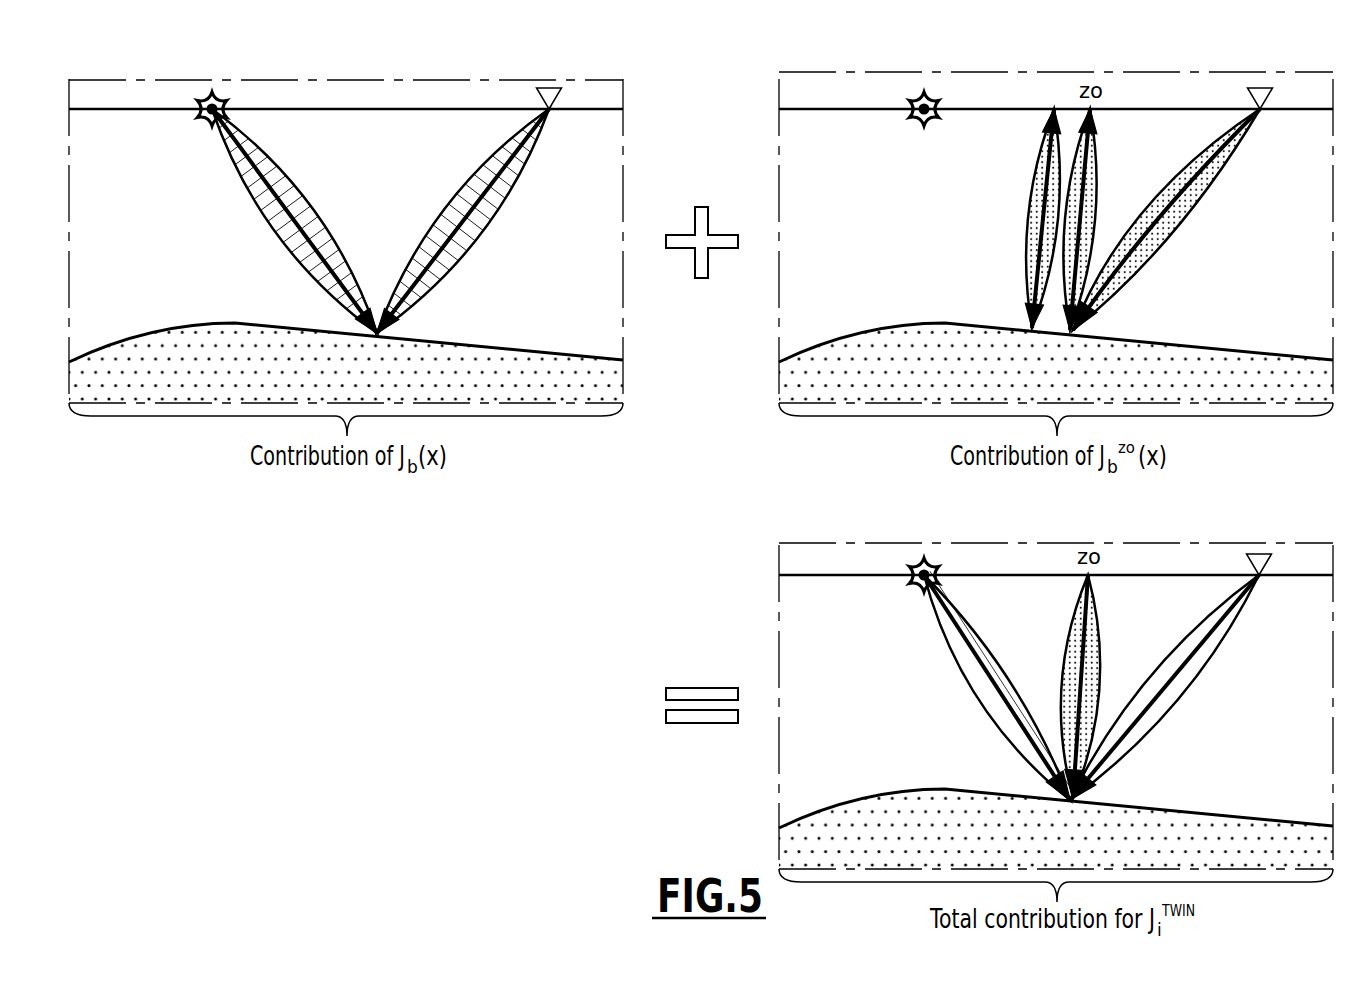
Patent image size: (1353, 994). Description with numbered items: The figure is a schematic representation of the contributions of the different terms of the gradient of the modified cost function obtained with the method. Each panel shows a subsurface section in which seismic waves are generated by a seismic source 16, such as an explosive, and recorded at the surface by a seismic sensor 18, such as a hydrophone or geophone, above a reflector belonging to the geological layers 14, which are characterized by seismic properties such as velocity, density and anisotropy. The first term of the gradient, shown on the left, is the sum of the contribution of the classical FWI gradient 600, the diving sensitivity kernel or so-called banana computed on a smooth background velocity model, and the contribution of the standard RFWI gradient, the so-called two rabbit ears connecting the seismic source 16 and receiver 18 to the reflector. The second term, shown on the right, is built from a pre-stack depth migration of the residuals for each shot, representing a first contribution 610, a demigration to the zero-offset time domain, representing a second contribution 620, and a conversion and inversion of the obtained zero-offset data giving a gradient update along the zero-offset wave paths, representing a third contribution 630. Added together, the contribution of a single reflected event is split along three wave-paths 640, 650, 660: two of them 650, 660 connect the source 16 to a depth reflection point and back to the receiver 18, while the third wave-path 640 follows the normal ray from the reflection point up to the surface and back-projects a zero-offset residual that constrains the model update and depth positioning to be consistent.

The geological layer 14 is at (701, 582).
The seismic source 16 is at (926, 558).
The seismic sensor 18 is at (1261, 554).
The classical FWI gradient 600 is at (492, 224).
The first contribution 610 is at (1172, 238).
The second contribution 620 is at (1102, 157).
The third contribution 630 is at (1024, 203).
The third wave-path 640 is at (1066, 622).
The wave-path 650 is at (970, 688).
The wave-path 660 is at (1203, 671).